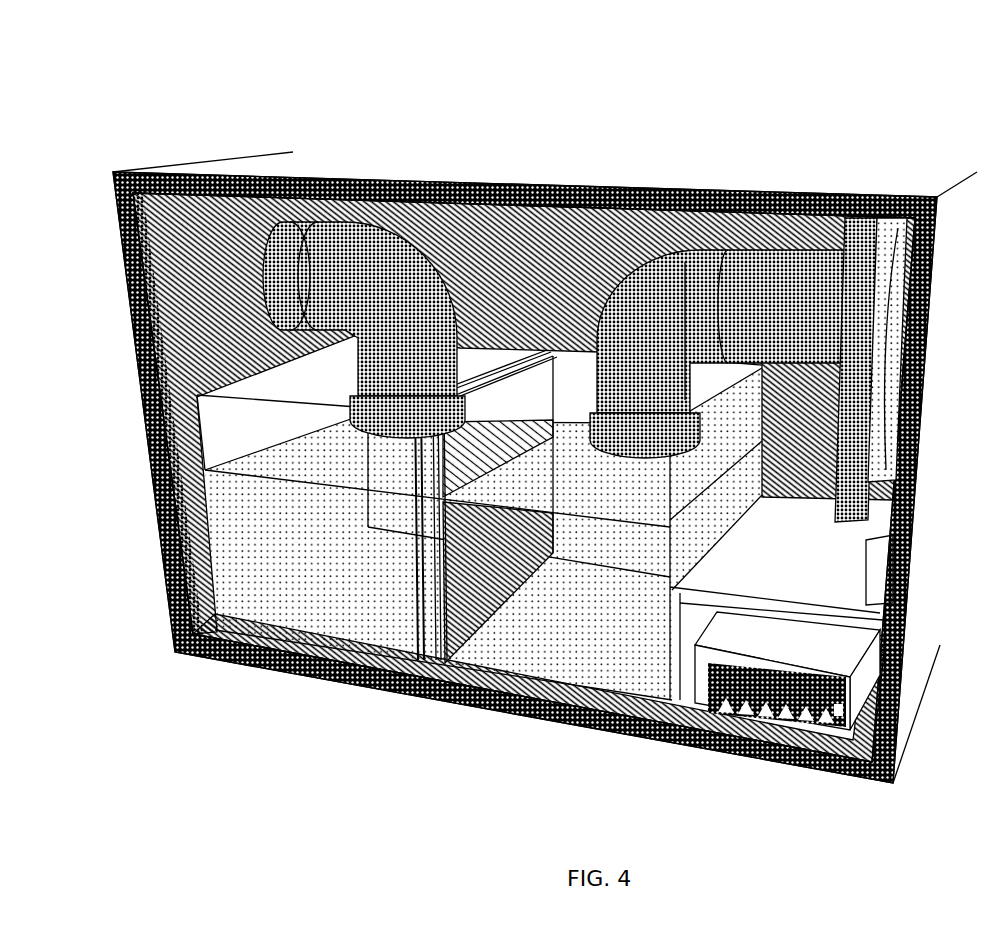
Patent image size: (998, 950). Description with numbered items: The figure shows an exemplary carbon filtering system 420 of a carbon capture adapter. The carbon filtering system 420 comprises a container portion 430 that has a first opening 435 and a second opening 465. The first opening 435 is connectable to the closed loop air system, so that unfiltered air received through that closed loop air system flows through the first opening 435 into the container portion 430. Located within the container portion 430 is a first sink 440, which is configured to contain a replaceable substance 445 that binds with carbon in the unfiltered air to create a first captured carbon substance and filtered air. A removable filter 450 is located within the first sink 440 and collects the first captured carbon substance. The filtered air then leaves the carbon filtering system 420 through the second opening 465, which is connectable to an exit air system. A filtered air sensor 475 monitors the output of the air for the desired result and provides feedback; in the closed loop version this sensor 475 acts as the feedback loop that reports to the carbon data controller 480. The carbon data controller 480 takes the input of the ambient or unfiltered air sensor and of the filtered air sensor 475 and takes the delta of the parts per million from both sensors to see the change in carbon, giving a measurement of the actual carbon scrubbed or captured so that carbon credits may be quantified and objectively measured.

The carbon filtering system 420 is at (980, 46).
The container portion 430 is at (133, 363).
The first opening 435 is at (366, 242).
The first sink 440 is at (217, 433).
The replaceable substance 445 is at (237, 537).
The removable filter 450 is at (417, 633).
The second opening 465 is at (776, 264).
The filtered air sensor 475 is at (867, 572).
The carbon data controller 480 is at (748, 716).